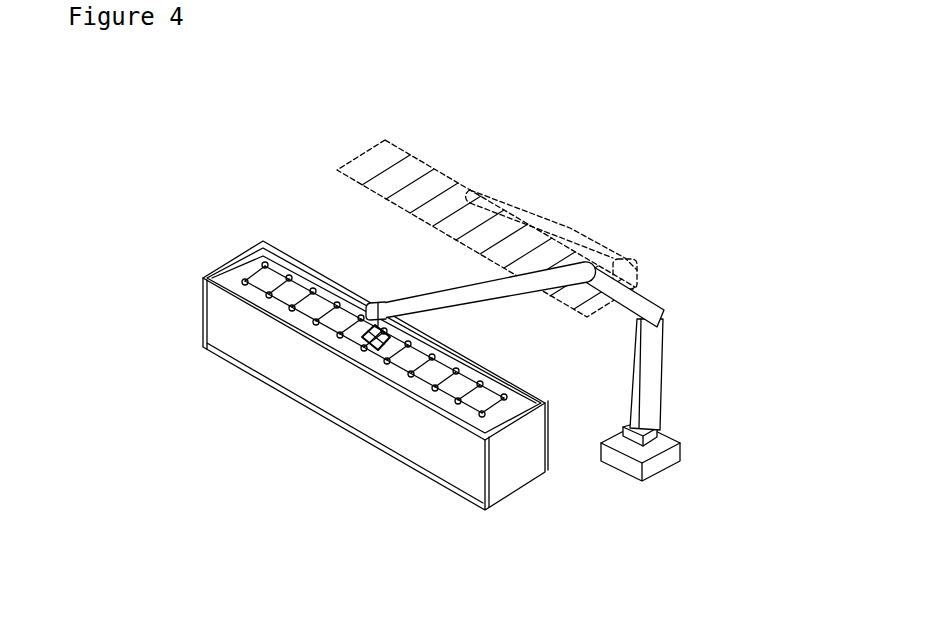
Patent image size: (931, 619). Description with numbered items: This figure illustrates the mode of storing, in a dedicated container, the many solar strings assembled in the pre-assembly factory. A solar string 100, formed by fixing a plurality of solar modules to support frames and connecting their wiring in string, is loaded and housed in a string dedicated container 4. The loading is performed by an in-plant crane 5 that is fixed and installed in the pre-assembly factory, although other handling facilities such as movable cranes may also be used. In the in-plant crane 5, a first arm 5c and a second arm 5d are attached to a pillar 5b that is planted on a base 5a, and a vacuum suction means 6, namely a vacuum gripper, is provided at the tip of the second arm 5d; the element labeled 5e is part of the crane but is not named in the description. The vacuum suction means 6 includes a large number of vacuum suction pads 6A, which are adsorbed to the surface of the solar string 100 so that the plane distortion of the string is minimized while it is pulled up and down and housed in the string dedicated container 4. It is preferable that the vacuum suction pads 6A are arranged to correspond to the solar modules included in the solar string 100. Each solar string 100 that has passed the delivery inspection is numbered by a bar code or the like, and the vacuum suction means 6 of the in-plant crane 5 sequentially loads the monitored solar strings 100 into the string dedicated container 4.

The string dedicated container 4 is at (296, 403).
The in-plant crane 5 is at (569, 333).
The base 5a is at (668, 430).
The pillar 5b is at (660, 350).
The first arm 5c is at (650, 306).
The second arm 5d is at (578, 262).
The hand 5e is at (382, 301).
The vacuum suction means 6 is at (483, 378).
The vacuum suction pads 6A is at (284, 272).
The solar string 100 is at (408, 138).